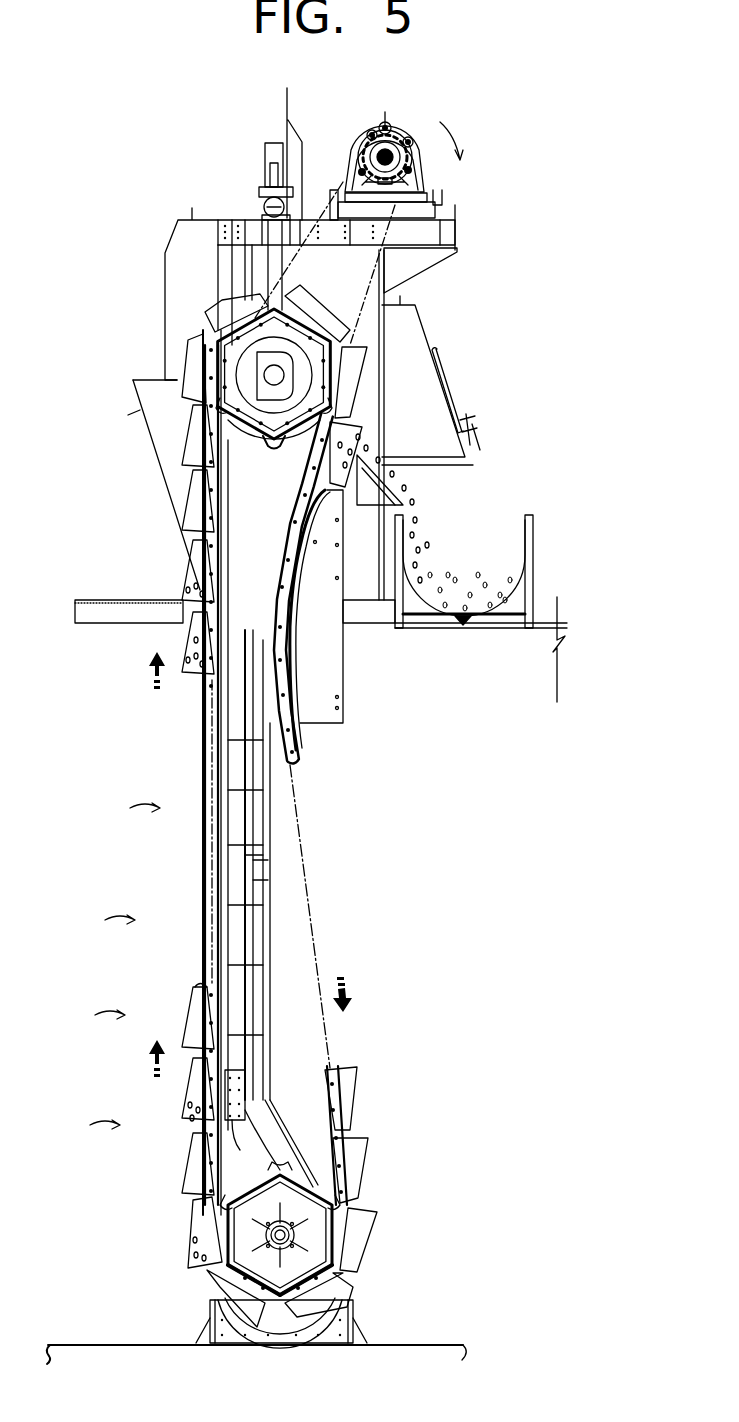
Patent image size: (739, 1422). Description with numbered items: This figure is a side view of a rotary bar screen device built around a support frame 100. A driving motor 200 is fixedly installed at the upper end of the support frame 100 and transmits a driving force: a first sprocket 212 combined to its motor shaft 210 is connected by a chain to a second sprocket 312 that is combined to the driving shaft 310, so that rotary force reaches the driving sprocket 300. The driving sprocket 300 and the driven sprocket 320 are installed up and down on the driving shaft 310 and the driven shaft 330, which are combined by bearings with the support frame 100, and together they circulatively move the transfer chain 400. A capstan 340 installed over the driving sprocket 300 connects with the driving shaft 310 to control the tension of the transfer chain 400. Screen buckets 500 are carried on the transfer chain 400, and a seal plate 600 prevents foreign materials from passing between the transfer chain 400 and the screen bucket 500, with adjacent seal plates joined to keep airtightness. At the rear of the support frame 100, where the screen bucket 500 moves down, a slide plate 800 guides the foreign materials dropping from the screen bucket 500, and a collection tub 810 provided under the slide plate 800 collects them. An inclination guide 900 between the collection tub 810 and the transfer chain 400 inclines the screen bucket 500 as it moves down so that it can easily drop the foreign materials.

The support frame 100 is at (200, 780).
The driving motor 200 is at (412, 172).
The motor shaft 210 is at (375, 130).
The first sprocket 212 is at (392, 130).
The driving sprocket 300 is at (318, 382).
The driving shaft 310 is at (274, 375).
The second sprocket 312 is at (236, 325).
The driven sprocket 320 is at (335, 1230).
The driven shaft 330 is at (280, 1235).
The capstan 340 is at (263, 175).
The transfer chain 400 is at (205, 520).
The screen bucket 500 is at (190, 455).
The seal plate 600 is at (205, 990).
The slide plate 800 is at (410, 492).
The collection tub 810 is at (530, 545).
The inclination guide 900 is at (320, 645).